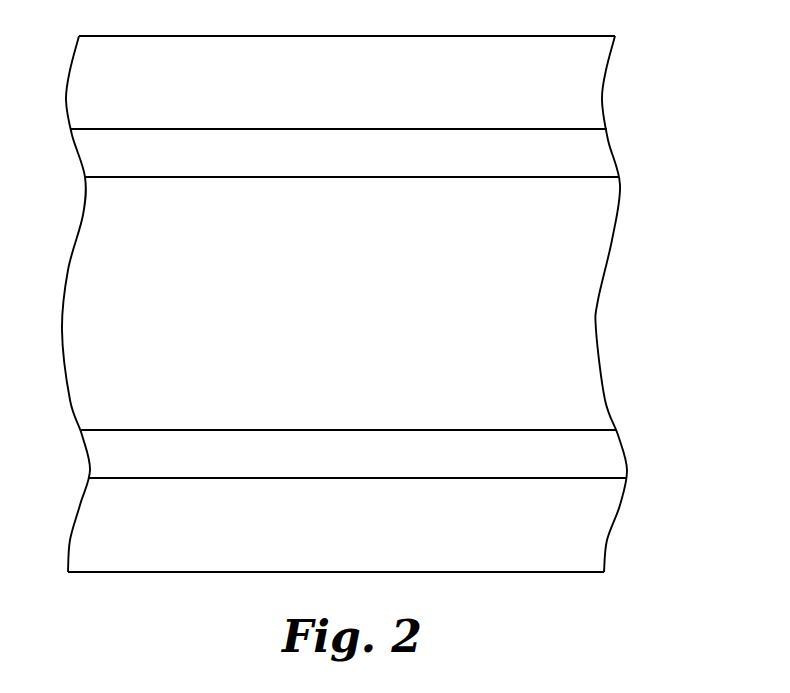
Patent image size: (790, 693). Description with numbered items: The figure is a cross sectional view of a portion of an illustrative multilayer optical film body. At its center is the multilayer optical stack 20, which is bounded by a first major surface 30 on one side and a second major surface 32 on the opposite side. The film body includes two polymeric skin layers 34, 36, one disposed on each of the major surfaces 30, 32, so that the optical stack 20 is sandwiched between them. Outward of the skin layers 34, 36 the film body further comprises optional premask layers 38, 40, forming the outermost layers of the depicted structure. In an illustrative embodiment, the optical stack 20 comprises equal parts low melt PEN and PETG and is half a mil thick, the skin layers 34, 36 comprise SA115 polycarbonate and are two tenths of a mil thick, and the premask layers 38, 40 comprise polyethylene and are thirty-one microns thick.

The multilayer optical stack 20 is at (578, 328).
The first major surface 30 is at (585, 177).
The second major surface 32 is at (585, 430).
The polymeric skin layer 34 is at (595, 150).
The polymeric skin layer 36 is at (600, 462).
The premask layer 38 is at (585, 78).
The premask layer 40 is at (585, 537).